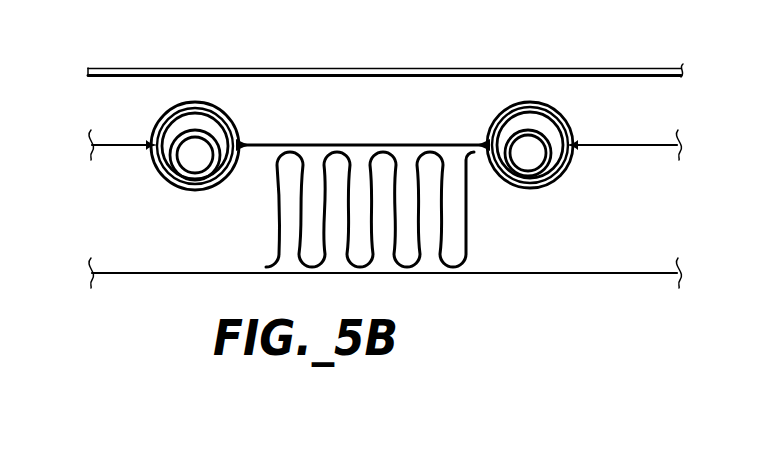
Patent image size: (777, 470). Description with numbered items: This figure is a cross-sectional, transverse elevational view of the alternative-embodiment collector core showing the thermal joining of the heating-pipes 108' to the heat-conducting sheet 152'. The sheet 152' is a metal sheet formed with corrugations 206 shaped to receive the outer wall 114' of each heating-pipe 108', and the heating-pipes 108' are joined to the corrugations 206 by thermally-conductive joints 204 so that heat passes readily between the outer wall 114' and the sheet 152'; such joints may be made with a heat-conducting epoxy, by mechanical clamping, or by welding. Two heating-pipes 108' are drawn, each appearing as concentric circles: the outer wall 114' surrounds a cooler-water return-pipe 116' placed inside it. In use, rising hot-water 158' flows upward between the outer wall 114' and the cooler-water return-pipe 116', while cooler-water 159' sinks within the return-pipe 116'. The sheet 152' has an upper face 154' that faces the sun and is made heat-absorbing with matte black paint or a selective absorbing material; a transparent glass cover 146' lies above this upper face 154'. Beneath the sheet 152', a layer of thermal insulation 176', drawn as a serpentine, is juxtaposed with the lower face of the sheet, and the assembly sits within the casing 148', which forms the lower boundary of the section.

The heating-pipe 108' is at (159, 138).
The outer wall 114' is at (185, 108).
The cooler-water return-pipe 116' is at (166, 190).
The transparent glass cover 146' is at (385, 52).
The casing 148' is at (385, 293).
The sheet 152' is at (362, 89).
The upper face 154' is at (362, 89).
The rising hot-water 158' is at (570, 134).
The cooler-water 159' is at (573, 184).
The thermally-conductive joint 204 is at (572, 140).
The corrugation 206 is at (568, 173).
The layer of thermal insulation 176' is at (394, 240).